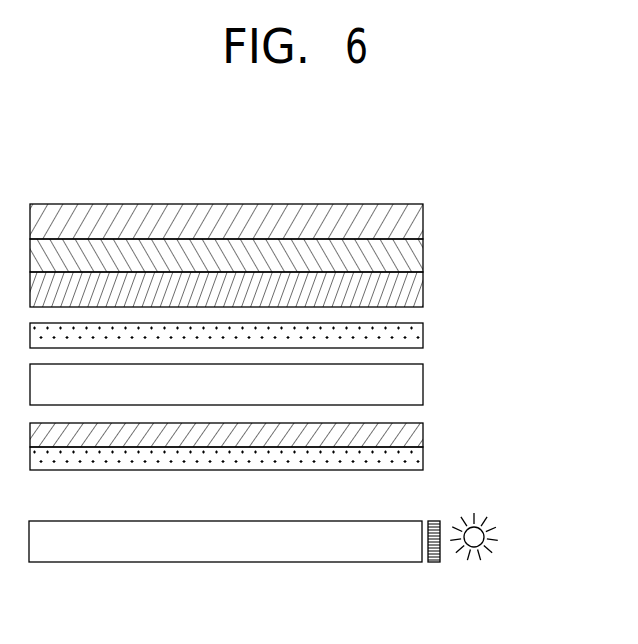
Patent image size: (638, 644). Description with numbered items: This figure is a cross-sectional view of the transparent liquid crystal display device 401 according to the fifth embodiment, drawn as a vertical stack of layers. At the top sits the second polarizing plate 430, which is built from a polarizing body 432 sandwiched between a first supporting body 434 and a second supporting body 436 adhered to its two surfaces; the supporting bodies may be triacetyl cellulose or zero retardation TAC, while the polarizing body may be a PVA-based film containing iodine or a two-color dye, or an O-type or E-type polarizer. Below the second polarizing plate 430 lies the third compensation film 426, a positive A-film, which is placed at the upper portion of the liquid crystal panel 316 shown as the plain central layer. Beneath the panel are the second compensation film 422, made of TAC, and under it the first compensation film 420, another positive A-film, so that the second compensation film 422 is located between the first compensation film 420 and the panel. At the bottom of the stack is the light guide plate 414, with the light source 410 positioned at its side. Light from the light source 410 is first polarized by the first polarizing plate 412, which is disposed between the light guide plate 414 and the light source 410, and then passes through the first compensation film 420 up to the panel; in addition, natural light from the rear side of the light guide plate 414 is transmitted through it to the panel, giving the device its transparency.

The transparent liquid crystal display device 401 is at (478, 158).
The second polarizing plate 430 is at (286, 257).
The second supporting body 436 is at (413, 221).
The polarizing body 432 is at (413, 259).
The first supporting body 434 is at (261, 289).
The third compensation film 426 is at (413, 335).
The display panel 316 is at (413, 385).
The second compensation film 422 is at (413, 432).
The first compensation film 420 is at (413, 458).
The light guide plate 414 is at (382, 550).
The first polarizing plate 412 is at (433, 566).
The light source 410 is at (480, 536).